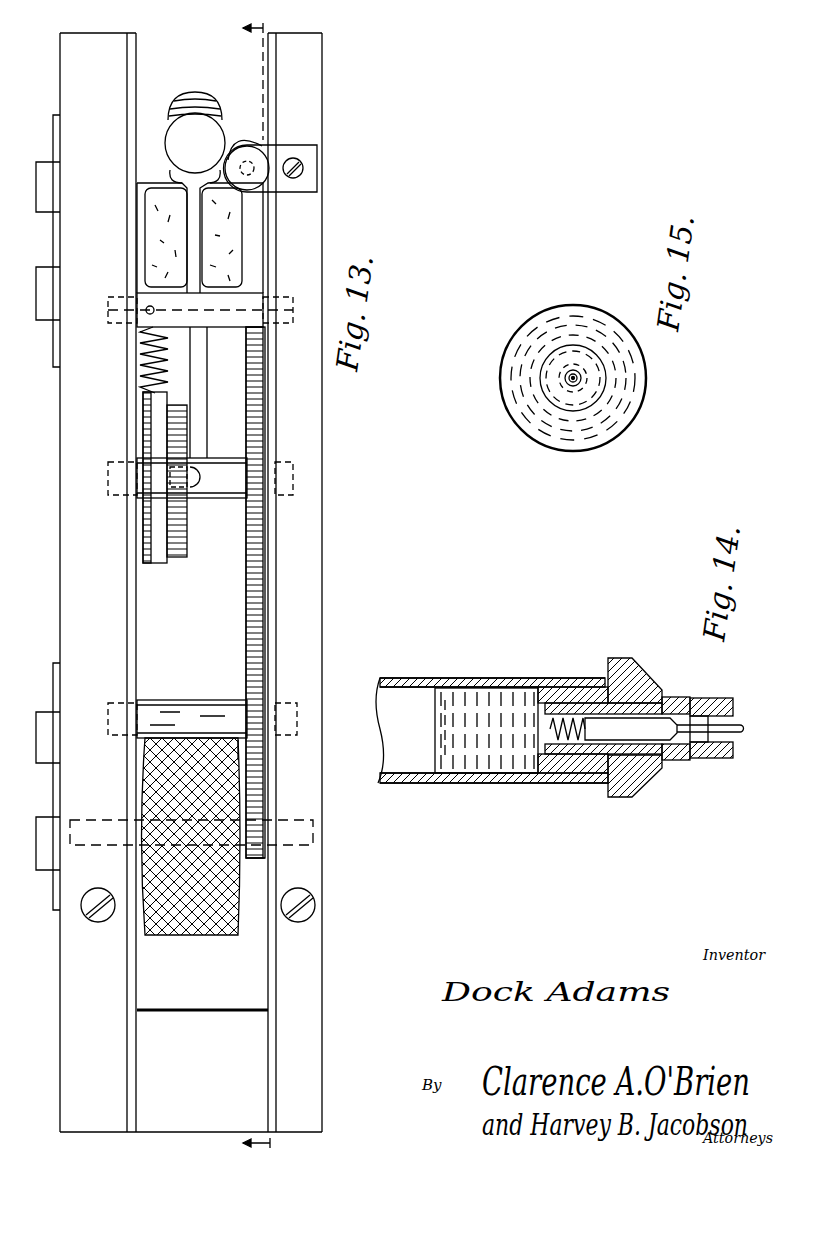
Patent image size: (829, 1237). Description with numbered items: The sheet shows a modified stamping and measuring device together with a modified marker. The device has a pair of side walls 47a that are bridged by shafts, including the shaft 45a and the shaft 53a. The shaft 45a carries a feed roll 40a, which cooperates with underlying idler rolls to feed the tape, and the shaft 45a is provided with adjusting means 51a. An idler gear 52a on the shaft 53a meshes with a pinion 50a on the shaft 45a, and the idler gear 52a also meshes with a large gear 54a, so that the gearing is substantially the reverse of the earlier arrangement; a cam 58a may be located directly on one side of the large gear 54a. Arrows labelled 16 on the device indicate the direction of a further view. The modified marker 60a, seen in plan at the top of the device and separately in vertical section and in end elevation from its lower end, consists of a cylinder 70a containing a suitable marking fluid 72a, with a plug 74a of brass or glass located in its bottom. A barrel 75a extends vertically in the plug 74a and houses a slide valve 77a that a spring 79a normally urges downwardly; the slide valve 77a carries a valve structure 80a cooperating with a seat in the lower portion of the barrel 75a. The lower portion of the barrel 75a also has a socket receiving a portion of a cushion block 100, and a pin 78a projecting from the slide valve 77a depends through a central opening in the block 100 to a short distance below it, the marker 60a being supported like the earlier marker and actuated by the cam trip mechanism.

In FIG. 13, the section line 16 is at (246, 587).
In FIG. 13, the feed roll 40a is at (203, 934).
In FIG. 13, the shaft 45a is at (97, 820).
In FIG. 13, the side walls 47a is at (65, 612).
In FIG. 13, the pinion 50a is at (255, 860).
In FIG. 13, the adjusting means 51a is at (102, 926).
In FIG. 13, the idler gear 52a is at (243, 682).
In FIG. 13, the shaft 53a is at (160, 700).
In FIG. 13, the large gear 54a is at (244, 574).
In FIG. 13, the cam 58a is at (177, 562).
In FIG. 13, the marker 60a is at (173, 138).
In FIG. 15, the marker 60a is at (496, 387).
In FIG. 14, the marker 60a is at (461, 676).
In FIG. 13, the ball head 70a is at (193, 133).
In FIG. 14, the ball head 70a is at (500, 688).
In FIG. 14, the marking fluid 72a is at (487, 762).
In FIG. 13, the plug 74a is at (200, 92).
In FIG. 15, the plug 74a is at (516, 338).
In FIG. 14, the plug 74a is at (575, 688).
In FIG. 15, the barrel 75a is at (558, 362).
In FIG. 14, the barrel 75a is at (600, 705).
In FIG. 14, the slide valve 77a is at (628, 724).
In FIG. 15, the pin 78a is at (573, 374).
In FIG. 14, the pin 78a is at (699, 759).
In FIG. 14, the spring 79a is at (583, 779).
In FIG. 14, the valve structure 80a is at (690, 760).
In FIG. 14, the cushion block 100 is at (697, 700).